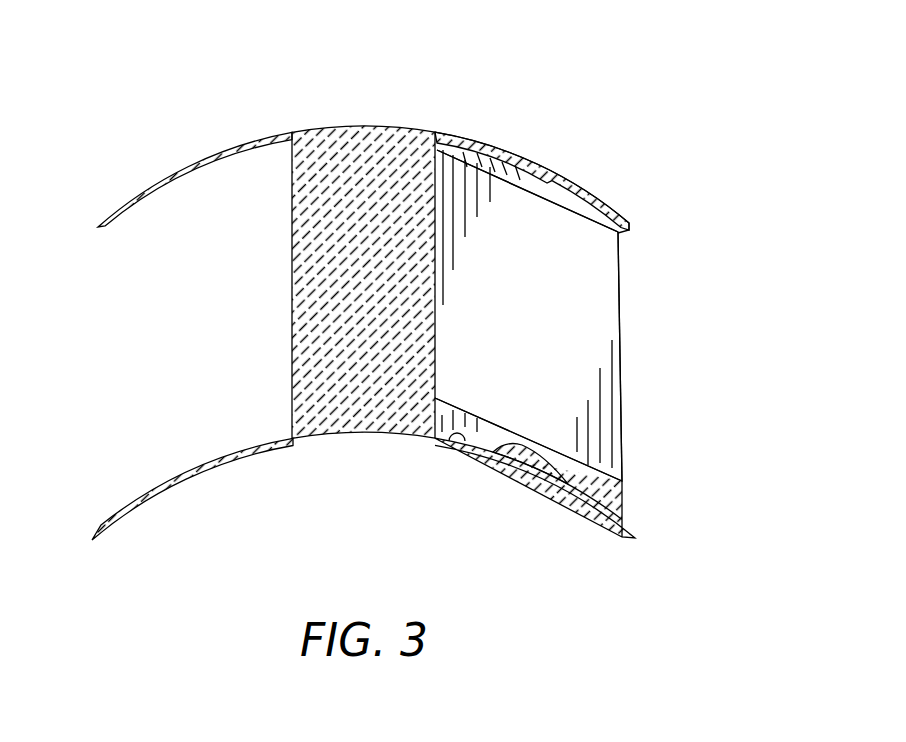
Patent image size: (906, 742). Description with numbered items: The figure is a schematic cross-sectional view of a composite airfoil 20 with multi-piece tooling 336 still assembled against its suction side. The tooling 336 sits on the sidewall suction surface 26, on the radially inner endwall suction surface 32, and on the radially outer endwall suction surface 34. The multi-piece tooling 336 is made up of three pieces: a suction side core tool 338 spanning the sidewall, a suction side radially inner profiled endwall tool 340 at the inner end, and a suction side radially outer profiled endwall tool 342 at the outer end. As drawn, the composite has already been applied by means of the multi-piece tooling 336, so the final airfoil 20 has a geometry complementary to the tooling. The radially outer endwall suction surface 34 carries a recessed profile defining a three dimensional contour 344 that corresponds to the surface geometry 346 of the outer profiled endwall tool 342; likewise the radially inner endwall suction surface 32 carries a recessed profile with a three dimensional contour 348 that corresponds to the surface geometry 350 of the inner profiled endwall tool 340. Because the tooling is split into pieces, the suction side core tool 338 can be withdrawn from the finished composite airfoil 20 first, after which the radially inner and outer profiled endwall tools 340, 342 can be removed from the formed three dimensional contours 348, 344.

The airfoil 20 is at (519, 84).
The sidewall suction surface 26 is at (432, 225).
The radially inner endwall suction surface 32 is at (448, 442).
The radially outer endwall suction surface 34 is at (475, 150).
The multi-piece tooling 336 is at (661, 365).
The suction side core tool 338 is at (630, 403).
The suction side radially inner profiled endwall tool 340 is at (626, 516).
The suction side radially outer profiled endwall tool 342 is at (628, 236).
The three dimensional contour 344 is at (559, 196).
The surface geometry 346 is at (556, 168).
The three dimensional contour 348 is at (579, 457).
The surface geometry 350 is at (538, 484).